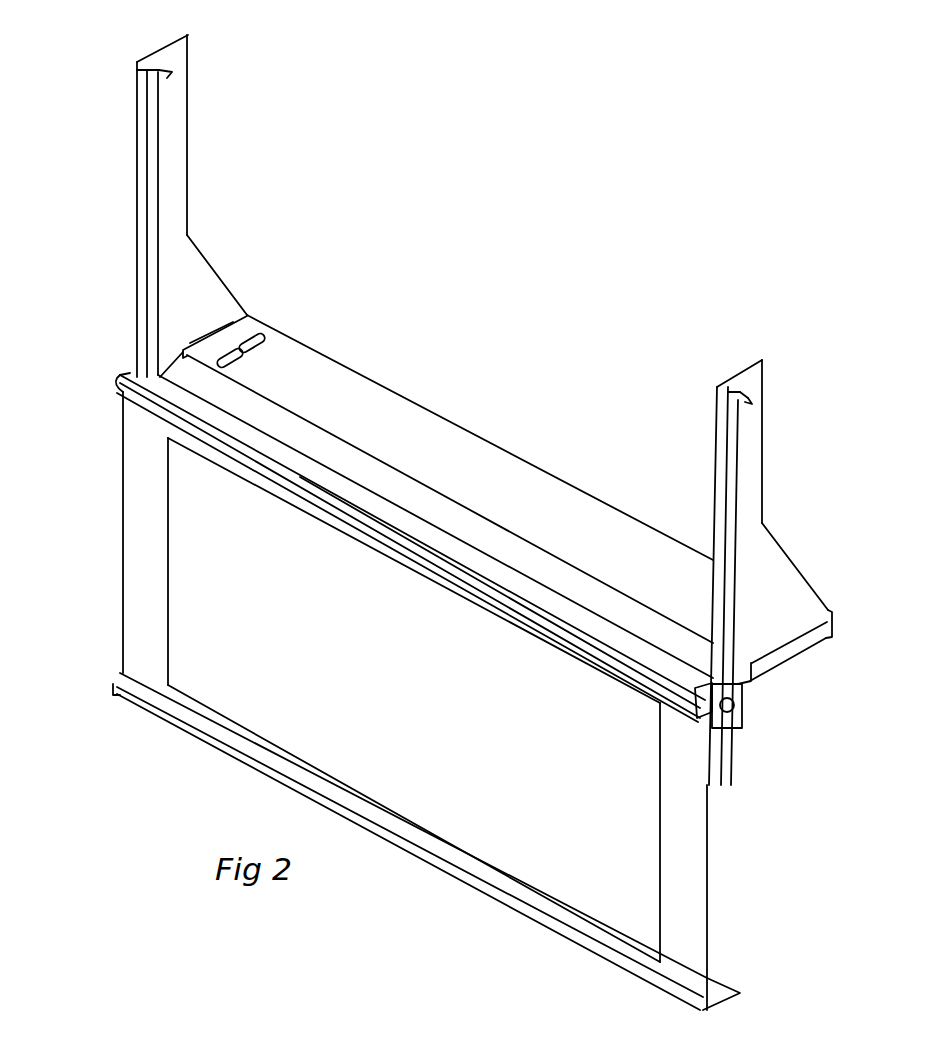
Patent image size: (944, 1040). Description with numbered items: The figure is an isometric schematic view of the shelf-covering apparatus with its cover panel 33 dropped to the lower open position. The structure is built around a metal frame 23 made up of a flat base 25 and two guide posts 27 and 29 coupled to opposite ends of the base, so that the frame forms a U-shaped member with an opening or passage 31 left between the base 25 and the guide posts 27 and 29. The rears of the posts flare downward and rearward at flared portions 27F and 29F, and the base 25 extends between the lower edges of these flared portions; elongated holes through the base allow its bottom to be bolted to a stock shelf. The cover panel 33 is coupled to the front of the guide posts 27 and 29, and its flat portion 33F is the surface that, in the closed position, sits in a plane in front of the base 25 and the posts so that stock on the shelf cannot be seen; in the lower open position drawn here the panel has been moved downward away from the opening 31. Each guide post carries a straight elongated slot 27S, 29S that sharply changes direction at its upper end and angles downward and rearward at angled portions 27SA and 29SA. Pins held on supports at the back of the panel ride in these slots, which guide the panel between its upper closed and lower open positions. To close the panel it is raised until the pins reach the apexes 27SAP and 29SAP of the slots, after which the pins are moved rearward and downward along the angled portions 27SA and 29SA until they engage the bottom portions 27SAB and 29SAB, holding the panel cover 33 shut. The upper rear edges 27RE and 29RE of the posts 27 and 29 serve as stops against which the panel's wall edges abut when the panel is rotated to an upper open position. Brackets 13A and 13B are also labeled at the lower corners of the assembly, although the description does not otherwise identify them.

The left mounting bracket 13A is at (120, 376).
The right mounting bracket 13B is at (712, 714).
The metal frame 23 is at (214, 148).
The base 25 is at (448, 413).
The guide post 27 is at (190, 214).
The elongated slot 27S is at (147, 212).
The angled slot portion 27SA is at (165, 70).
The slot apex 27SAP is at (140, 82).
The bottom portion of angled slot 27SAB is at (170, 76).
The upper rear edge 27RE is at (188, 117).
The flared portion 27F is at (222, 279).
The guide post 29 is at (717, 452).
The elongated slot 29S is at (735, 478).
The angled slot portion 29SA is at (750, 400).
The slot apex 29SAP is at (750, 402).
The bottom portion of angled slot 29SAB is at (751, 403).
The upper rear edge 29RE is at (762, 400).
The flared portion 29F is at (780, 543).
The opening 31 is at (606, 408).
The cover panel 33 is at (406, 861).
The flat portion of panel 33F is at (197, 560).